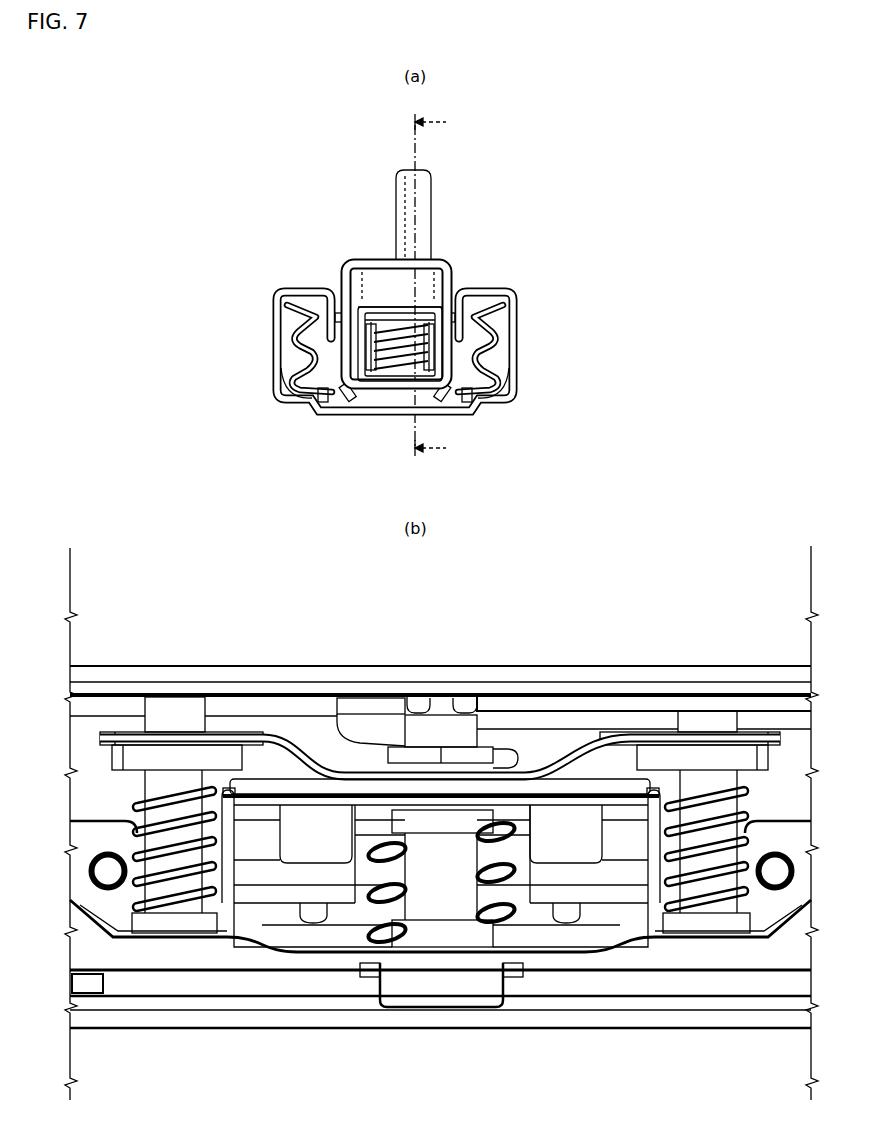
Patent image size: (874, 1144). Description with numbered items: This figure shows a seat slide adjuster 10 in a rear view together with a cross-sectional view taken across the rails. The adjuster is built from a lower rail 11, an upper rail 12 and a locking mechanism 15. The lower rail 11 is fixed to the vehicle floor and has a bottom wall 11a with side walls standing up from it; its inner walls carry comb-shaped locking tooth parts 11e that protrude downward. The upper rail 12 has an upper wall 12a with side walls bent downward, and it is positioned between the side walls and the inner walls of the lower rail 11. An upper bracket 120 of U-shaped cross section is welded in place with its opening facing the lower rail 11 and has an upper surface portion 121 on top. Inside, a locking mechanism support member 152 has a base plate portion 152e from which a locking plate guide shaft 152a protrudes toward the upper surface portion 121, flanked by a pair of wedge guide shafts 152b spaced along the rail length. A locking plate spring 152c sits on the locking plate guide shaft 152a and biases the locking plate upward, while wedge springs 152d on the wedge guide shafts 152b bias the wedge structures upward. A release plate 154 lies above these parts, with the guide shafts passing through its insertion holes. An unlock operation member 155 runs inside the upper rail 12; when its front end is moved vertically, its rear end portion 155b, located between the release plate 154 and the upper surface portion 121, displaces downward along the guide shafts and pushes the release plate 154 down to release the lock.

The seat slide adjuster 10 is at (283, 186).
The lower rail 11 is at (521, 334).
The bottom wall 11a is at (465, 1020).
The locking tooth parts 11e is at (316, 828).
The upper rail 12 is at (355, 256).
The upper wall 12a is at (724, 674).
The upper bracket 120 is at (386, 270).
The upper surface portion 121 is at (655, 686).
The locking mechanism 15 is at (384, 387).
The locking mechanism support member 152 is at (288, 956).
The locking plate guide shaft 152a is at (445, 908).
The wedge guide shafts 152b is at (158, 890).
The locking plate spring 152c is at (508, 920).
The wedge springs 152d is at (190, 905).
The base plate portion 152e is at (336, 955).
The release plate 154 is at (512, 762).
The unlock operation member 155 is at (433, 180).
The rear end portion 155b is at (572, 705).